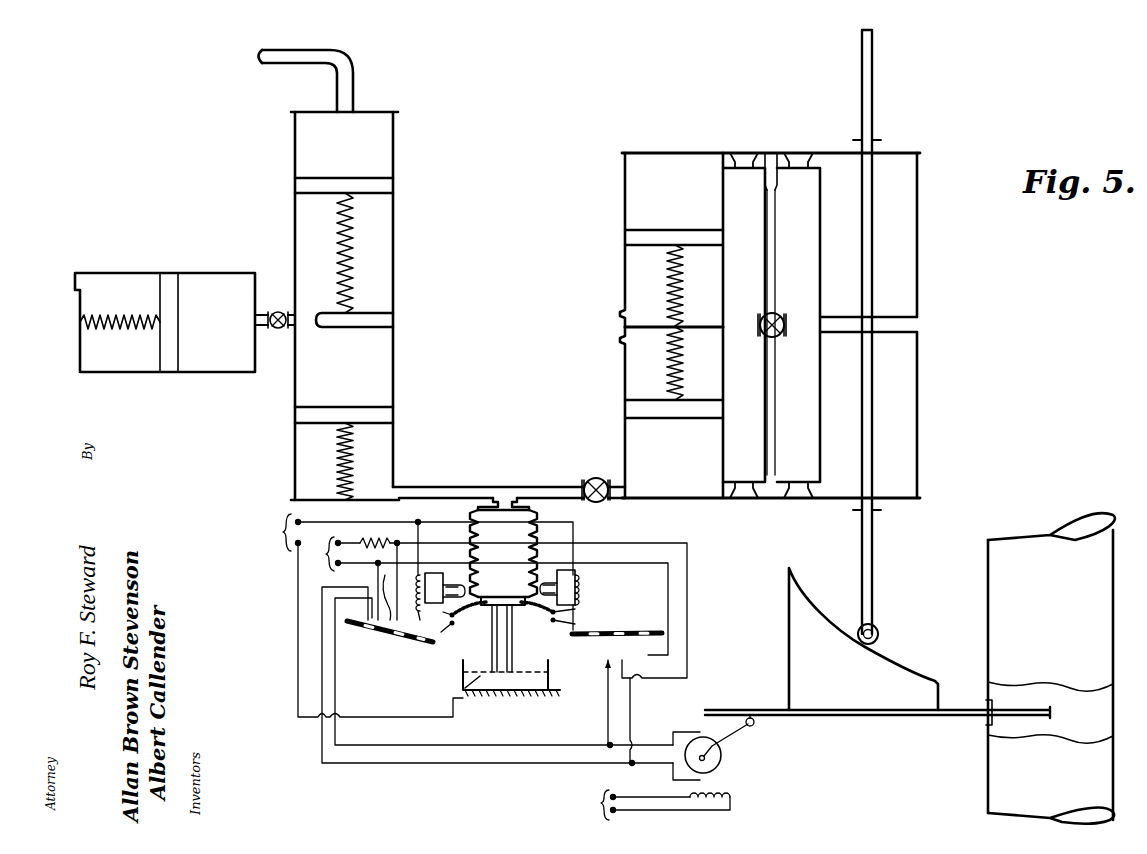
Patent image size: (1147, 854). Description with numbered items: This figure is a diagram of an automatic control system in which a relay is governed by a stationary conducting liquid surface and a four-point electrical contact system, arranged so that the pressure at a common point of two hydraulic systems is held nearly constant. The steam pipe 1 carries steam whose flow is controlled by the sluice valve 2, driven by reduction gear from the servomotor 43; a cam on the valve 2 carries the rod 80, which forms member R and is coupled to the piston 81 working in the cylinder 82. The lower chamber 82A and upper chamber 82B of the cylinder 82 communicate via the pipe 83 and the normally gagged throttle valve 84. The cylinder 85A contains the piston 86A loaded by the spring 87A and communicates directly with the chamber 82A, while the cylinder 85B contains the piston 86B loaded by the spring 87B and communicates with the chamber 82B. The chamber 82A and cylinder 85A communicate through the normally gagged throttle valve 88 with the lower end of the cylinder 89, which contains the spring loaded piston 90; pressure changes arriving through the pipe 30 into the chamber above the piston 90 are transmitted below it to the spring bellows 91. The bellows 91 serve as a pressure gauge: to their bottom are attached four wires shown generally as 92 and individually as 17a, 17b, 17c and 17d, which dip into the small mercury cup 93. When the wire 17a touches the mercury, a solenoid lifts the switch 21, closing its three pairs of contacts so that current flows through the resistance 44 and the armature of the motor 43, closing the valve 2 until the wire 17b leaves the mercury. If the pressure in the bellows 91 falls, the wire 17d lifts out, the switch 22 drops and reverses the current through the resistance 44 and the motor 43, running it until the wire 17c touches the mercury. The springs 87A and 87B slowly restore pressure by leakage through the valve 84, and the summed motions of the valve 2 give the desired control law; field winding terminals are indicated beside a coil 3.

The steam pipe 1 is at (993, 772).
The sluice valve 2 is at (1044, 708).
The coil 3 is at (718, 785).
The contact point wire 17a is at (490, 660).
The contact point wire 17b is at (492, 680).
The contact point wire 17c is at (506, 690).
The contact point wire 17d is at (513, 672).
The switch 21 is at (398, 637).
The switch 22 is at (635, 633).
The pipe 30 is at (302, 63).
The servomotor 43 is at (722, 757).
The resistance 44 is at (380, 540).
The rod 80 is at (874, 572).
The piston 81 is at (878, 317).
The cylinder 82 is at (919, 305).
The lower chamber 82A is at (919, 388).
The upper chamber 82B is at (919, 232).
The pipe 83 is at (765, 228).
The throttle valve 84 is at (779, 314).
The cylinder 85A is at (623, 424).
The cylinder 85B is at (623, 218).
The piston 86A is at (696, 420).
The piston 86B is at (660, 237).
The spring 87A is at (690, 366).
The spring 87B is at (690, 282).
The throttle valve 88 is at (598, 502).
The cylinder 89 is at (294, 452).
The piston 90 is at (350, 408).
The spring bellows 91 is at (480, 580).
The wires 92 is at (505, 645).
The mercury cup 93 is at (549, 680).